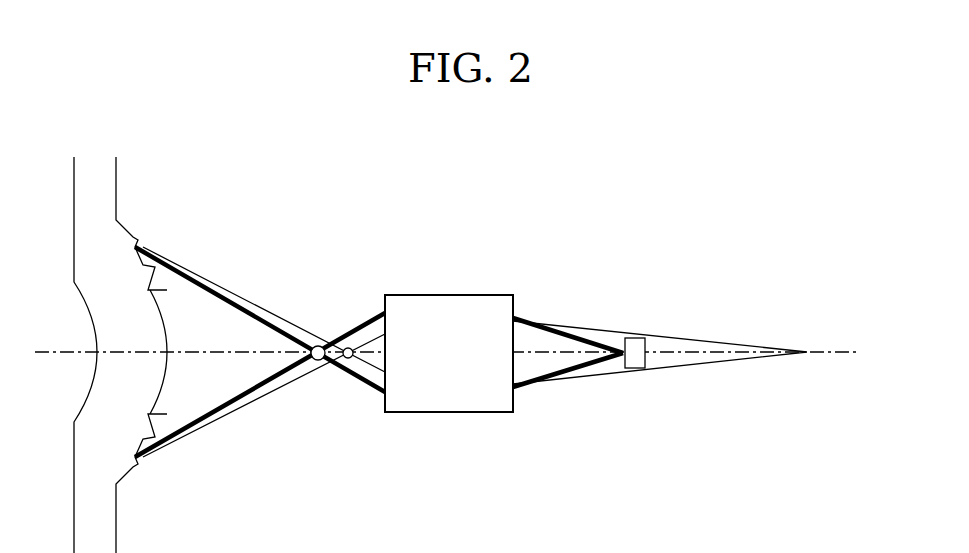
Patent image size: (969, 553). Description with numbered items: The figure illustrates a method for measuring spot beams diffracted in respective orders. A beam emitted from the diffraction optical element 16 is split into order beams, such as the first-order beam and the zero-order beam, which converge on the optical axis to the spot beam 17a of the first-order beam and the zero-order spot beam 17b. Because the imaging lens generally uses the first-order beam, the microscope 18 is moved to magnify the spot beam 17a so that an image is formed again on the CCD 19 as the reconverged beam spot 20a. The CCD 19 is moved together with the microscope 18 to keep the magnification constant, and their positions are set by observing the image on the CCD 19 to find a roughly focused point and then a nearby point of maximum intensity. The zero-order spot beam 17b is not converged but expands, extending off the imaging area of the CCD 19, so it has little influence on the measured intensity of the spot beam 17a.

The diffraction optical element 16 is at (95, 173).
The spot beam 17a is at (318, 345).
The zero-order spot beam 17b is at (348, 347).
The microscope 18 is at (445, 295).
The CCD 19 is at (635, 338).
The reconverged beam spot 20a is at (623, 347).